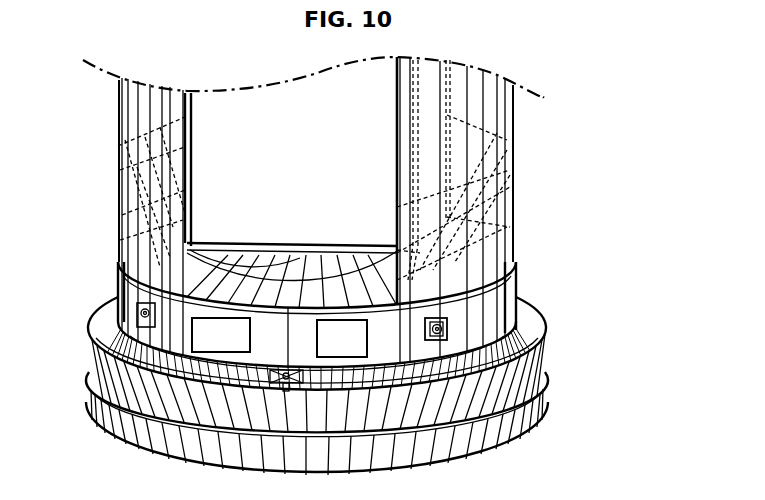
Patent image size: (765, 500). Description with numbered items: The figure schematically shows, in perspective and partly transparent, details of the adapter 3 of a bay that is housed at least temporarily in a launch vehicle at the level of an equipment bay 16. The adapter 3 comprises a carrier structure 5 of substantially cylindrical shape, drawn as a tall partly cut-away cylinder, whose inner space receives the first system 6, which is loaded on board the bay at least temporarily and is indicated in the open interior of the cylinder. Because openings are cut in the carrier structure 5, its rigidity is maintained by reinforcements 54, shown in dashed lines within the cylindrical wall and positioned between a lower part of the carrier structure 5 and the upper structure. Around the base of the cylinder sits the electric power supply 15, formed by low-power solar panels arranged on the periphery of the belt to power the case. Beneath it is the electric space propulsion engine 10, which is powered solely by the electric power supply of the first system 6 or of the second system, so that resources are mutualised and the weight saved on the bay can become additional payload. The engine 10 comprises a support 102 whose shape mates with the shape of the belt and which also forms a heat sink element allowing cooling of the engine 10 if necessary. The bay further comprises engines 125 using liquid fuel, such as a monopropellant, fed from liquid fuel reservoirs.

The adapter 3 is at (128, 300).
The carrier structure 5 is at (500, 117).
The first system 6 is at (304, 171).
The electric space propulsion engine 10 is at (533, 407).
The electric power supply 15 is at (513, 293).
The equipment bay 16 is at (106, 428).
The reinforcements 54 is at (143, 214).
The support 102 is at (372, 337).
The engines 125 is at (262, 390).